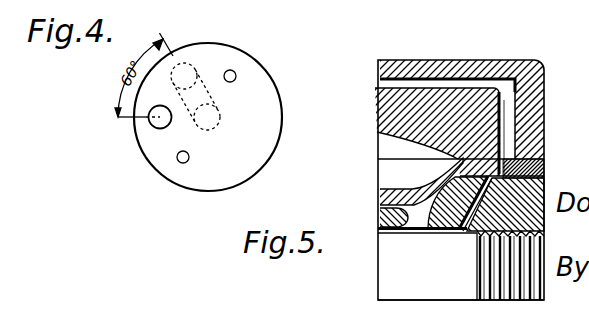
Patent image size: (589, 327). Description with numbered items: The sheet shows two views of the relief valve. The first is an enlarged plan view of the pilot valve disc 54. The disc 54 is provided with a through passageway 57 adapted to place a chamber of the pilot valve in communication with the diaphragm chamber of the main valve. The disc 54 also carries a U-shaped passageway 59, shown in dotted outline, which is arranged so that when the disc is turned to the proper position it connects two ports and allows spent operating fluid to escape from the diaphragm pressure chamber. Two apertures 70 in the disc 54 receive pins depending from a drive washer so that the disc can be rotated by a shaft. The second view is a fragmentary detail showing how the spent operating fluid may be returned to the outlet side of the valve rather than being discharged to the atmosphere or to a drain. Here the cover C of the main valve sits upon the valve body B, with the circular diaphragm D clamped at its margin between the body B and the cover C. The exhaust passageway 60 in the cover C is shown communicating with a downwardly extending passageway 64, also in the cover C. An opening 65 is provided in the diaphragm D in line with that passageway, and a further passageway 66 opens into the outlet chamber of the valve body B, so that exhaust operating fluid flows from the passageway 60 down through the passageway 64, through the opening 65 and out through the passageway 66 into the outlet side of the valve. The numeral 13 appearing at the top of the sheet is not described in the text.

In FIG. 4, the pilot valve disc 54 is at (277, 107).
In FIG. 4, the through passageway 57 is at (158, 126).
In FIG. 4, the U-shaped passageway 59 is at (217, 100).
In FIG. 4, the apertures 70 is at (234, 74).
In FIG. 5, the pipe 13 is at (451, 0).
In FIG. 5, the cover C is at (541, 62).
In FIG. 5, the passageway for exhaust fluid 60 is at (412, 79).
In FIG. 5, the downwardly extending passageway 64 is at (510, 113).
In FIG. 5, the opening 65 is at (506, 170).
In FIG. 5, the further passageway 66 is at (472, 232).
In FIG. 5, the circular diaphragm D is at (379, 197).
In FIG. 5, the body B is at (378, 283).